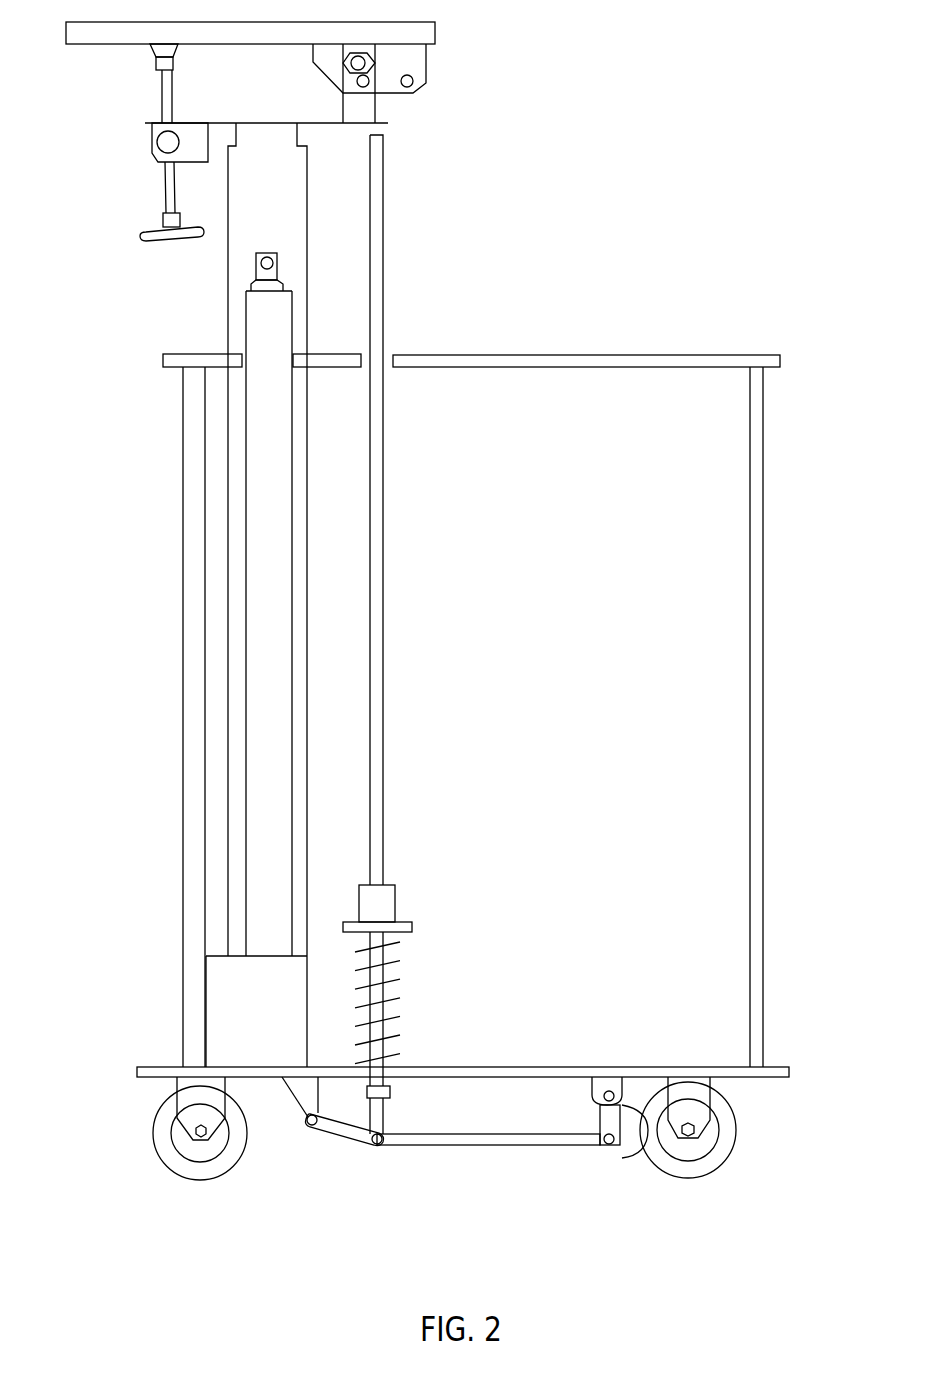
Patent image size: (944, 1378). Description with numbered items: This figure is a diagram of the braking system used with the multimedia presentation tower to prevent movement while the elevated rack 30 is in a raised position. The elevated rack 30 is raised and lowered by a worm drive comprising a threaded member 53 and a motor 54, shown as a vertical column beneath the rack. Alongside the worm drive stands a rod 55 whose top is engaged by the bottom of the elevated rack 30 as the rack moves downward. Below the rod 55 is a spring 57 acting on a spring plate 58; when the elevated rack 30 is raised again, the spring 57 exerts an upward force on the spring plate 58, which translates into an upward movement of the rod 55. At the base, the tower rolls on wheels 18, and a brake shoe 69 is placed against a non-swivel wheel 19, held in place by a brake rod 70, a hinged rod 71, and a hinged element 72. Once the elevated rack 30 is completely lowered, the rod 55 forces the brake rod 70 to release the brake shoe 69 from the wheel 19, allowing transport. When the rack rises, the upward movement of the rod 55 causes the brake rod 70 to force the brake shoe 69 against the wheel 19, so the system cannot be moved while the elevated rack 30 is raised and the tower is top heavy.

The elevated rack 30 is at (435, 37).
The rod 55 is at (383, 237).
The threaded member 53 is at (260, 319).
The motor 54 is at (228, 1008).
The spring plate 58 is at (395, 905).
The spring 57 is at (403, 987).
The wheels 18 is at (173, 1157).
The non-swivel wheel 19 is at (715, 1154).
The hinged rod 71 is at (348, 1132).
The brake rod 70 is at (463, 1140).
The hinged element 72 is at (605, 1120).
The brake shoe 69 is at (626, 1160).